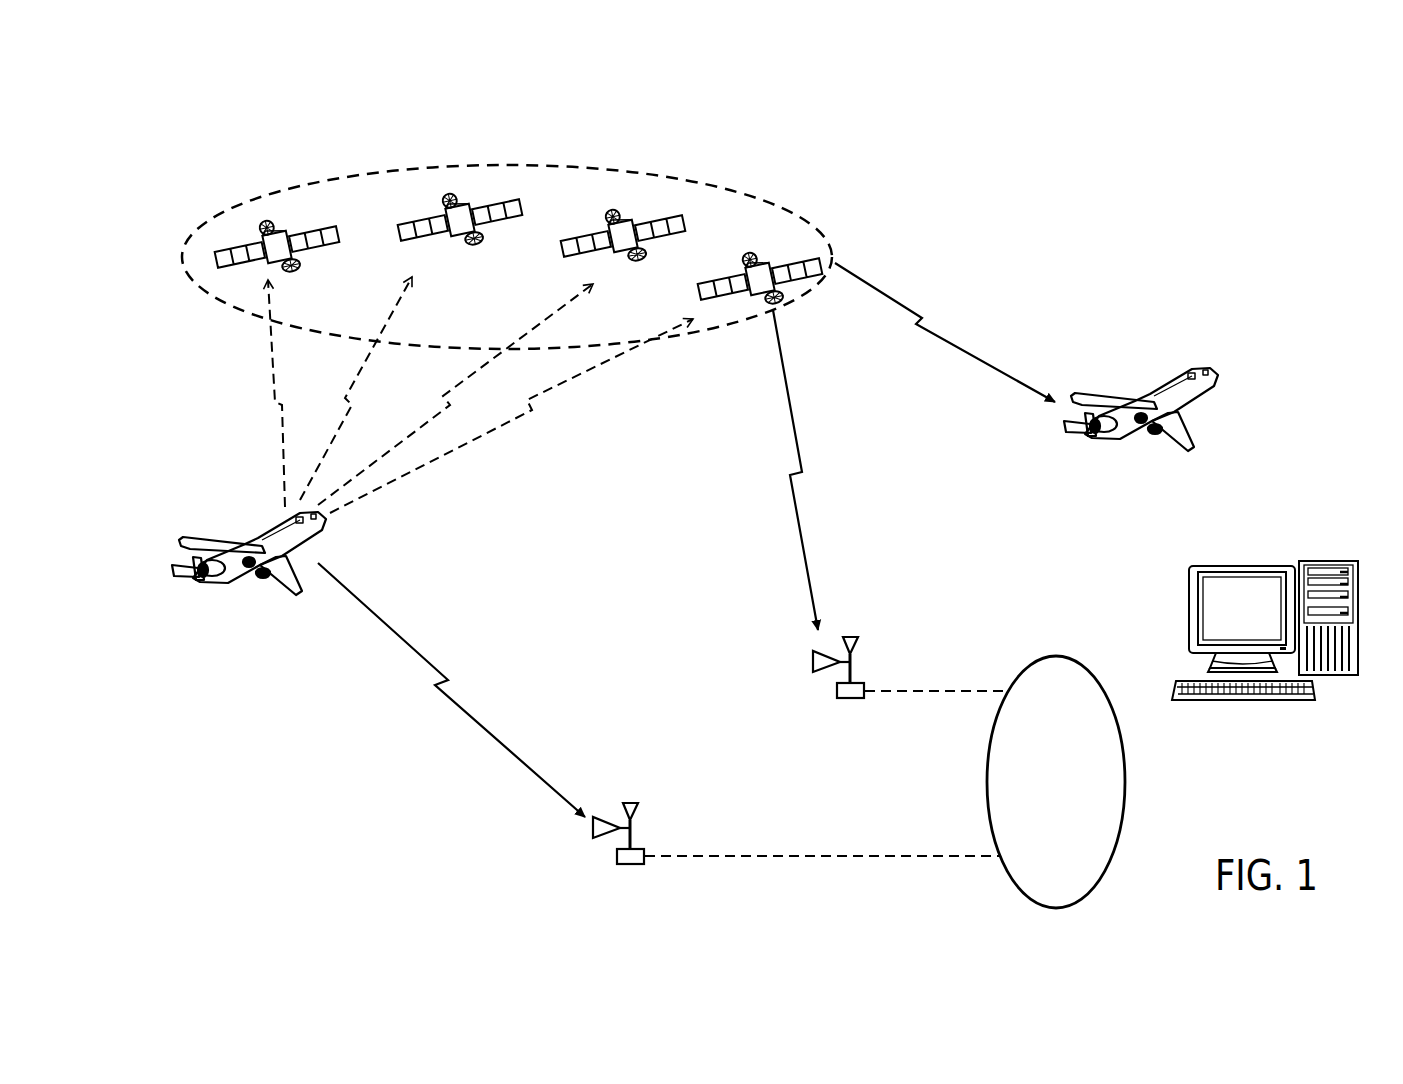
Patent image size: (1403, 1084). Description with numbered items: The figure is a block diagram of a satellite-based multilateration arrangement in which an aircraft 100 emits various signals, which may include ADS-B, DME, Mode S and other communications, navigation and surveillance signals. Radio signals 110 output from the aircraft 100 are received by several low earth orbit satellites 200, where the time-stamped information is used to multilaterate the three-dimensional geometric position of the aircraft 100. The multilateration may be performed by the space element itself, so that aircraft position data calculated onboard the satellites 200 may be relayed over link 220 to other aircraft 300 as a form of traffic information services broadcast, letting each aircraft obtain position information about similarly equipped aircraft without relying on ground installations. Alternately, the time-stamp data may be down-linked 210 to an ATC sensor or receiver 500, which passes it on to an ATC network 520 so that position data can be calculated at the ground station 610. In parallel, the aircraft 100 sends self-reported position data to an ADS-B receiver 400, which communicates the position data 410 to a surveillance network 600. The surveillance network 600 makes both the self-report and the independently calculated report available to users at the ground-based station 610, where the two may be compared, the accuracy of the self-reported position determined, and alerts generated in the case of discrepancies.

The aircraft 100 is at (238, 543).
The radio signals 110 is at (453, 443).
The satellites 200 is at (772, 203).
The satellite downlink to ground station 210 is at (803, 460).
The link 220 is at (905, 302).
The other aircraft 300 is at (1130, 402).
The ADS-B receiver 400 is at (632, 848).
The position data 410 is at (800, 855).
The ATC sensor or receiver 500 is at (813, 660).
The ATC network 520 is at (917, 690).
The surveillance network 600 is at (1124, 745).
The ground-based station 610 is at (1300, 562).